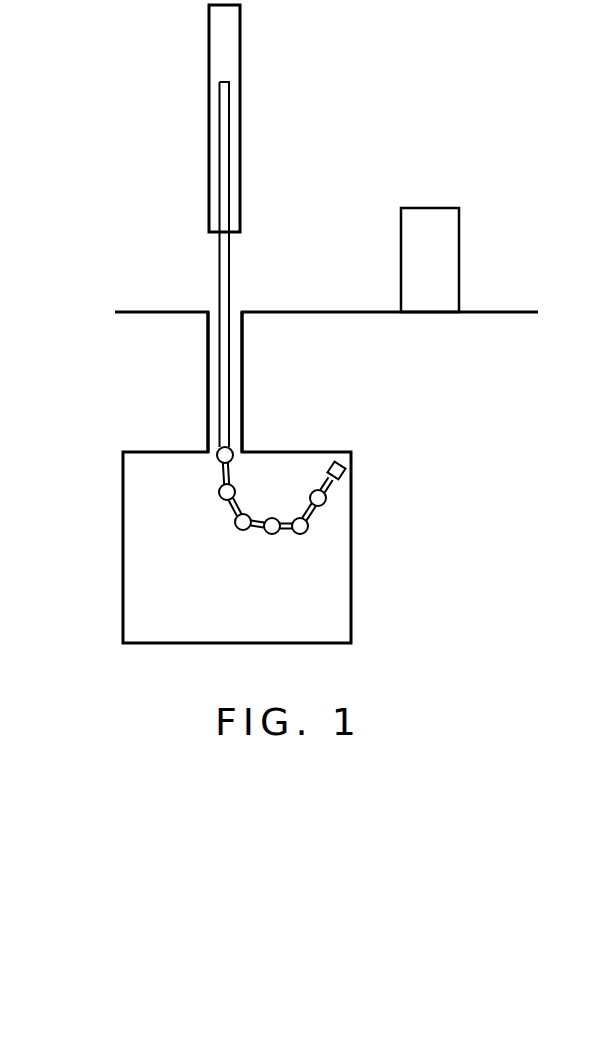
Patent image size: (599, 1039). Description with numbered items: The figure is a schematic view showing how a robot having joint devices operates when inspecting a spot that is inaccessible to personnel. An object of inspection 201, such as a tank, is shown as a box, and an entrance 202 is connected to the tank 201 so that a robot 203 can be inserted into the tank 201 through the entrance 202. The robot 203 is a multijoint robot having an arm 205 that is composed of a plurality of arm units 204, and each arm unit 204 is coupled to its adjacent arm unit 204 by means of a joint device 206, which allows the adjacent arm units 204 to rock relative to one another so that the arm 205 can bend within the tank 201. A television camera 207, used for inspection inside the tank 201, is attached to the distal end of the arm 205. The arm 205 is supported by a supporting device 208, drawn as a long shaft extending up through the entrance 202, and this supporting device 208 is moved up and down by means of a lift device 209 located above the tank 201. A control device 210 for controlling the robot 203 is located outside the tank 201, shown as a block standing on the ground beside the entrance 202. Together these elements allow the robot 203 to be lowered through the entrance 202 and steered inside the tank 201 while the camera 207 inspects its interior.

The object of inspection 201 is at (140, 612).
The entrance 202 is at (242, 392).
The robot 203 is at (210, 501).
The arm unit 204 is at (255, 533).
The arm 205 is at (236, 531).
The joint device 206 is at (323, 505).
The television camera 207 is at (345, 470).
The supporting device 208 is at (219, 278).
The lift device 209 is at (240, 157).
The control device 210 is at (450, 262).